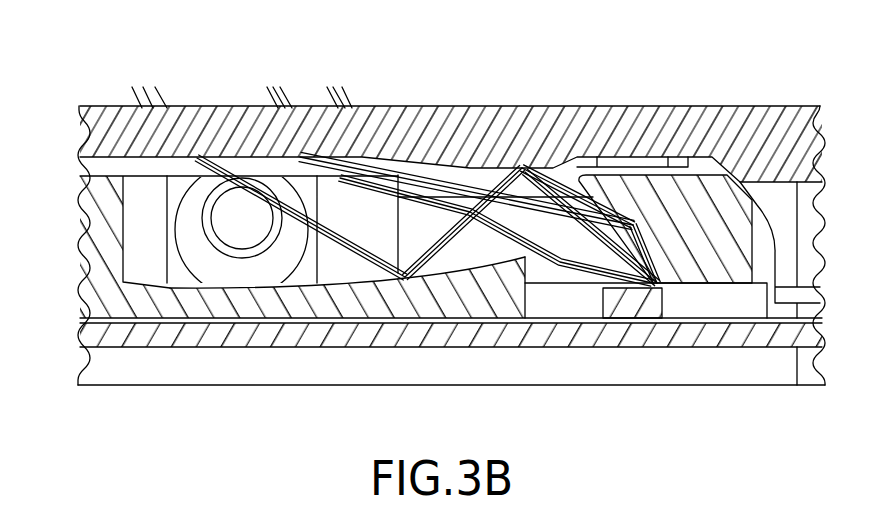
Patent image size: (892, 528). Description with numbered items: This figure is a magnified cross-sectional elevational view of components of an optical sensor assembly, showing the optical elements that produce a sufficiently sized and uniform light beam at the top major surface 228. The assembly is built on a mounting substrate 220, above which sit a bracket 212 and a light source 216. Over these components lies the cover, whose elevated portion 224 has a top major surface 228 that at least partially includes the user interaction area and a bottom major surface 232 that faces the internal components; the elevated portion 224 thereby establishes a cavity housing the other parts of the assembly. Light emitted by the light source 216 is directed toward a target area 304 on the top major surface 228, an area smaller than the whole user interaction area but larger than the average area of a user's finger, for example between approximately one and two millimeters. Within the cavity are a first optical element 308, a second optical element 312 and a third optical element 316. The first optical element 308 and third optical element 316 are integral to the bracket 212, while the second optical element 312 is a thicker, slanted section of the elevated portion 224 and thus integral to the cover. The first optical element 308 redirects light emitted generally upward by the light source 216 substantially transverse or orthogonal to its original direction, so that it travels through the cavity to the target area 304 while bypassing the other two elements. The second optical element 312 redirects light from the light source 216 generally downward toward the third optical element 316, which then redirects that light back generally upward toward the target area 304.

The bracket 212 is at (150, 298).
The light source 216 is at (622, 313).
The mounting substrate 220 is at (415, 330).
The elevated portion 224 is at (140, 120).
The top major surface 228 is at (213, 108).
The bottom major surface 232 is at (197, 158).
The target area 304 is at (305, 87).
The first optical element 308 is at (662, 205).
The second optical element 312 is at (500, 142).
The third optical element 316 is at (360, 293).